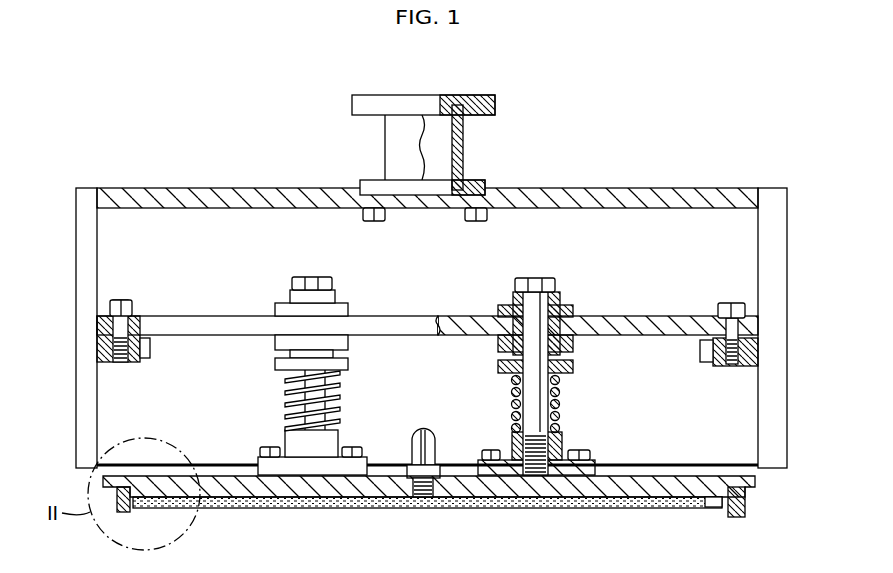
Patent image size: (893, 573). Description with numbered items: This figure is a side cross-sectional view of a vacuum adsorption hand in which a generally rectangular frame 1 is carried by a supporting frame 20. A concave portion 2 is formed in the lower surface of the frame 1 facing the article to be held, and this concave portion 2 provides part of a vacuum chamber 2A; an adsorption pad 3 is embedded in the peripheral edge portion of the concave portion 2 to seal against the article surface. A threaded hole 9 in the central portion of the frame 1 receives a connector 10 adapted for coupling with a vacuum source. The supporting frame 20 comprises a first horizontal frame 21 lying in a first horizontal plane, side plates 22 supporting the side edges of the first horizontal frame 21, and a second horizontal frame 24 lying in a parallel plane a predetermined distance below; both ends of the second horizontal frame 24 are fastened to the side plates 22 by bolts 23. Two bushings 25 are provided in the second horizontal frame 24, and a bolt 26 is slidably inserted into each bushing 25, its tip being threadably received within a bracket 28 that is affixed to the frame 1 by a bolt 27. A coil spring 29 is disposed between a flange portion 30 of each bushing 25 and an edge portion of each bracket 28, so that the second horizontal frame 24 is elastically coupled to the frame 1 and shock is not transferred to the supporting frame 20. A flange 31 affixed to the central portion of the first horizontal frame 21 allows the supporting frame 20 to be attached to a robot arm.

The frame 1 is at (650, 476).
The concave portion 2 is at (710, 508).
The vacuum chamber 2A is at (258, 498).
The adsorption pad 3 is at (127, 512).
The threaded hole 9 is at (416, 488).
The connector 10 is at (427, 430).
The supporting frame 20 is at (429, 291).
The first horizontal frame 21 is at (637, 190).
The side plates 22 is at (76, 256).
The bolts 23 is at (130, 302).
The second horizontal frame 24 is at (636, 318).
The bushings 25 is at (290, 299).
The bolt 26 is at (515, 283).
The bolt 27 is at (356, 448).
The brackets 28 is at (262, 462).
The coil spring 29 is at (290, 392).
The flange portion 30 is at (573, 365).
The flange 31 is at (492, 108).